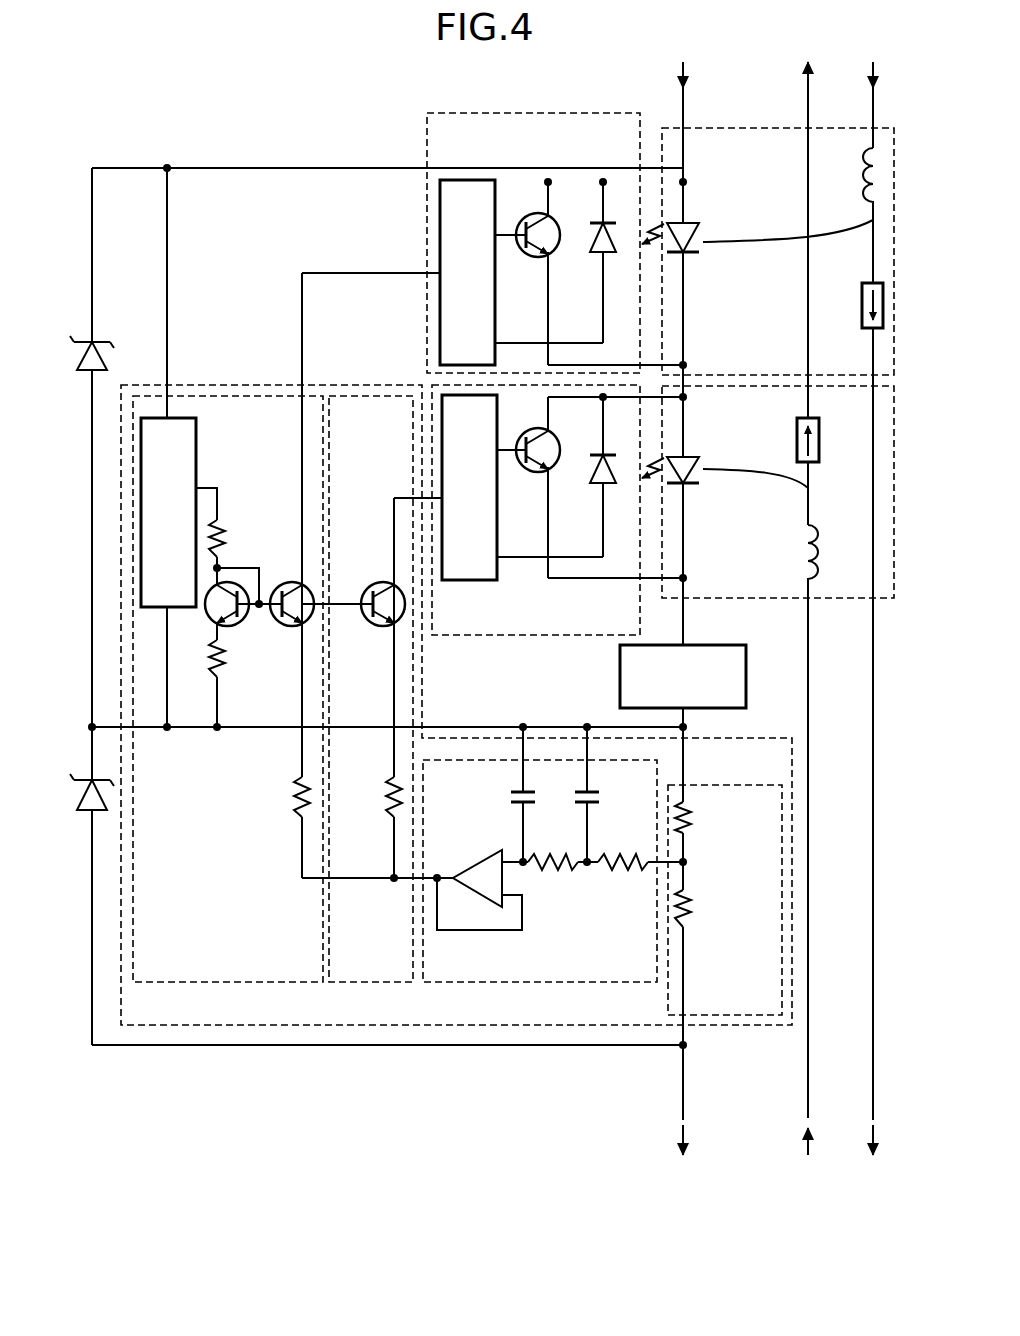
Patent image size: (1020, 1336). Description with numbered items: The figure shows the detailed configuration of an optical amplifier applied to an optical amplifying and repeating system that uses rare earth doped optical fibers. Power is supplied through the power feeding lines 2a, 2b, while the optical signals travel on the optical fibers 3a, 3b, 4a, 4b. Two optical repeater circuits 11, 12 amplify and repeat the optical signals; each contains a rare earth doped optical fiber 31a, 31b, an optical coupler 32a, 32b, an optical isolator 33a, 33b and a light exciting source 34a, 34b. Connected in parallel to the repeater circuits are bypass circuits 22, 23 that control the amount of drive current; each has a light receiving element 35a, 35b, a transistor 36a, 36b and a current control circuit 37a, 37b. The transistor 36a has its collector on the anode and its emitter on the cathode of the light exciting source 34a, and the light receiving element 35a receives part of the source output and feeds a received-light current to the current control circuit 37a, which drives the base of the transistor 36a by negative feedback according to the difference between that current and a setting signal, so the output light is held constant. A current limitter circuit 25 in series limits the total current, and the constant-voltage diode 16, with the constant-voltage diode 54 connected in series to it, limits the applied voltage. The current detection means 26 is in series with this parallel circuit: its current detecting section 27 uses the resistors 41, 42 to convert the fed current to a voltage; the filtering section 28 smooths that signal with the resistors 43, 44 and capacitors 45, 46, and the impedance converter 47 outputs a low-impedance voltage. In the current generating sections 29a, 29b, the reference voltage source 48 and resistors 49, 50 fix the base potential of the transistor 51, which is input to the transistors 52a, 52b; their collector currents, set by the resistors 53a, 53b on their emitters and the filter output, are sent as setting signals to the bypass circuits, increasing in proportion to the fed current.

The power feeding line 2a is at (682, 106).
The power feeding line 2b is at (682, 1099).
The optical fiber 3a is at (807, 106).
The optical fiber 3b is at (807, 1099).
The optical fiber 4a is at (872, 106).
The optical fiber 4b is at (872, 1099).
The optical repeater circuit 11 is at (778, 229).
The optical repeater circuit 12 is at (778, 516).
The constant-voltage diode 16 is at (92, 340).
The bypass circuit 22 is at (555, 243).
The bypass circuit 23 is at (557, 531).
The current limitter circuit 25 is at (620, 686).
The current detection means 26 is at (198, 385).
The current detecting section 27 is at (730, 784).
The filtering section 28 is at (606, 984).
The current generating section 29a is at (256, 394).
The current generating section 29b is at (368, 394).
The rare earth doped optical fiber 31a is at (858, 172).
The rare earth doped optical fiber 31b is at (822, 558).
The optical coupler 32a is at (873, 222).
The optical coupler 32b is at (810, 493).
The optical isolator 33a is at (858, 320).
The optical isolator 33b is at (819, 430).
The light exciting source 34a is at (692, 226).
The light exciting source 34b is at (690, 454).
The light receiving element 35a is at (584, 259).
The light receiving element 35b is at (590, 487).
The transistor 36a is at (522, 266).
The transistor 36b is at (528, 434).
The current control circuit 37a is at (495, 334).
The current control circuit 37b is at (495, 537).
The resistor 41 is at (694, 818).
The resistor 42 is at (694, 906).
The resistor 43 is at (622, 874).
The resistor 44 is at (552, 874).
The capacitor 45 is at (602, 798).
The capacitor 46 is at (507, 798).
The impedance converter 47 is at (470, 862).
The reference voltage source 48 is at (196, 440).
The resistor 49 is at (228, 530).
The resistor 50 is at (228, 680).
The transistor 51 is at (238, 628).
The transistor 52a is at (282, 582).
The transistor 52b is at (372, 628).
The resistor 53a is at (286, 796).
The resistor 53b is at (362, 790).
The constant-voltage diode 54 is at (84, 770).